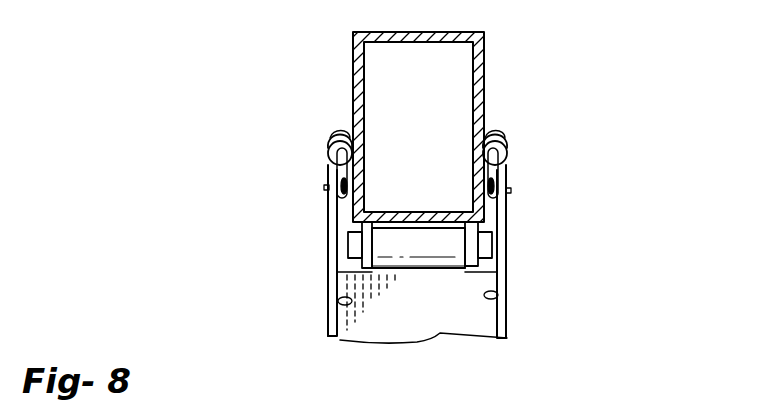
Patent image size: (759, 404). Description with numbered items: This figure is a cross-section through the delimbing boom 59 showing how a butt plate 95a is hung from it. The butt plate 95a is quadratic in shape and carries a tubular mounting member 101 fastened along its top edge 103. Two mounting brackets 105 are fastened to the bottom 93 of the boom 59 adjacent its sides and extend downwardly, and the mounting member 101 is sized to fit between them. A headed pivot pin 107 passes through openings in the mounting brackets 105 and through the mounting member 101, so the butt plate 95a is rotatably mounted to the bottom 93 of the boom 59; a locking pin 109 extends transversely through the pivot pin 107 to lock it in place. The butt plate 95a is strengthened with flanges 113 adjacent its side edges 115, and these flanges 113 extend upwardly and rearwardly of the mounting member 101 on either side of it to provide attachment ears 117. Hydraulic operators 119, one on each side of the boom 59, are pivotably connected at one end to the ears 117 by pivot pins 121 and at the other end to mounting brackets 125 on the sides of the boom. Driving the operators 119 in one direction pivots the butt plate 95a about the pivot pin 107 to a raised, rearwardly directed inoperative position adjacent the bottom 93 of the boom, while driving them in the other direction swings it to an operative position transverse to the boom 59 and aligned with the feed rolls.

The delimbing boom 59 is at (492, 81).
The tubular mounting member 101 is at (428, 230).
The mounting brackets 105 is at (360, 277).
The headed pivot pin 107 is at (350, 237).
The locking pin 109 is at (490, 235).
The attachment ears 117 is at (333, 178).
The hydraulic operators 119 is at (329, 153).
The mounting brackets 125 is at (345, 131).
The pivot pins 121 is at (326, 188).
The side edges 115 is at (340, 303).
The flanges 113 is at (329, 325).
The butt plate 95a is at (352, 340).
The bottom 93 is at (397, 227).
The top edge 103 is at (450, 272).